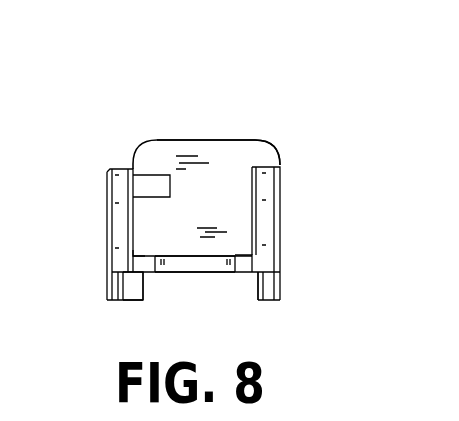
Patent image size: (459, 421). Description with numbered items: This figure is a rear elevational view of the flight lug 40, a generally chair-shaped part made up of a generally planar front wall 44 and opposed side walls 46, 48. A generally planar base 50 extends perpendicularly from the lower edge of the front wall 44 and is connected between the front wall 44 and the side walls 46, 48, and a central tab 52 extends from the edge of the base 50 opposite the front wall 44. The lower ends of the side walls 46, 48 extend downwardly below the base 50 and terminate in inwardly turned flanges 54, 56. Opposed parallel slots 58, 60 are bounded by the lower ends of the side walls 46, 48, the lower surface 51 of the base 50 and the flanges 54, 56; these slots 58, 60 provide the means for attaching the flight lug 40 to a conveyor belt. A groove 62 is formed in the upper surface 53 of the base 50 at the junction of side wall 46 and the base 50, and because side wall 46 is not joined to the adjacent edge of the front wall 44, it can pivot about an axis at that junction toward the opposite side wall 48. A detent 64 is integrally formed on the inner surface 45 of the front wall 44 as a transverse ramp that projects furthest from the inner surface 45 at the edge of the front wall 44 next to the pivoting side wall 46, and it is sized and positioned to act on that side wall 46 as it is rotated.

The flight lug 40 is at (233, 127).
The front wall 44 is at (198, 140).
The inner surface of the front wall 45 is at (248, 155).
The side wall 46 is at (107, 214).
The side wall 48 is at (276, 201).
The base 50 is at (239, 253).
The lower surface of the base 51 is at (168, 272).
The central tab 52 is at (196, 262).
The upper surface of the base 53 is at (192, 256).
The inwardly turned flange 54 is at (137, 306).
The inwardly turned flange 56 is at (259, 301).
The slot 58 is at (256, 279).
The slot 60 is at (133, 282).
The groove 62 is at (138, 258).
The detent 64 is at (167, 197).